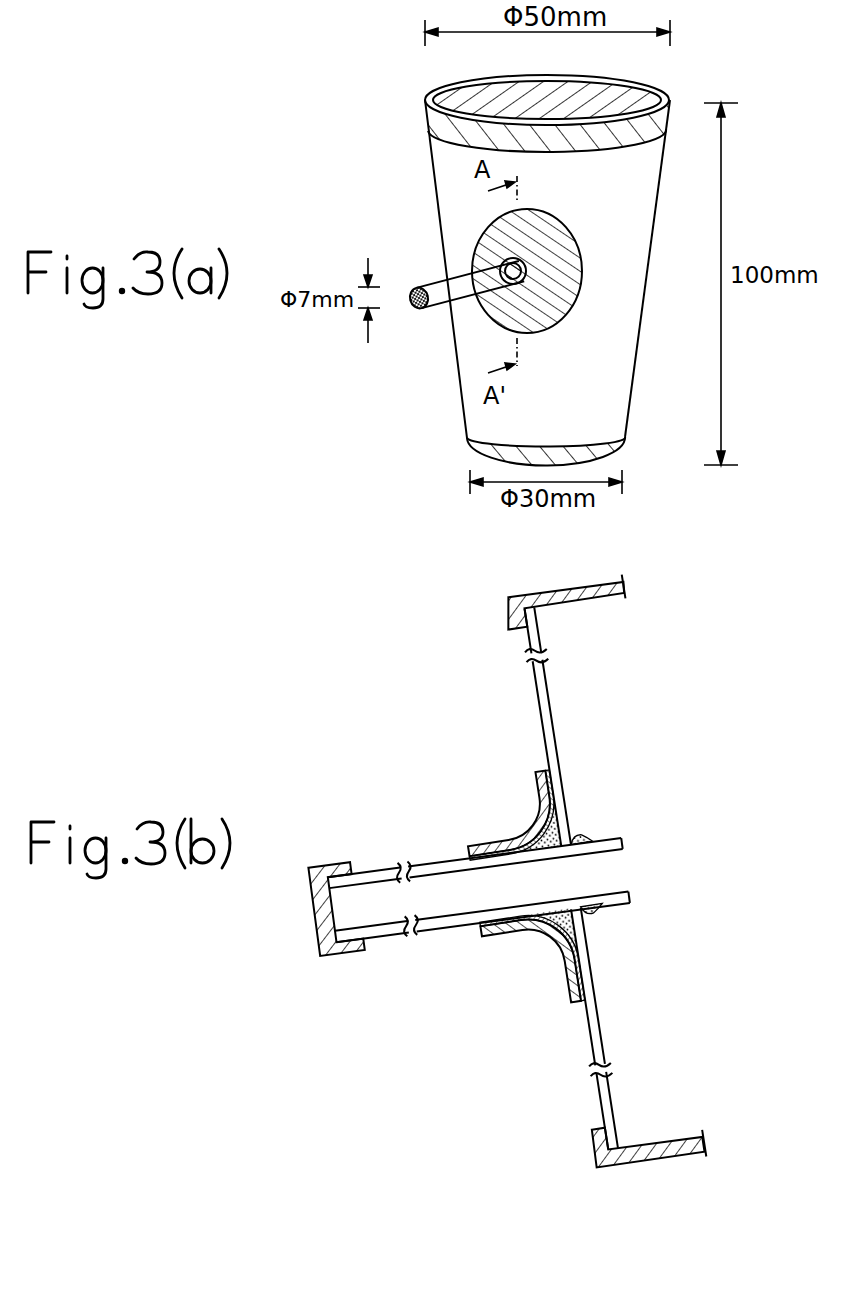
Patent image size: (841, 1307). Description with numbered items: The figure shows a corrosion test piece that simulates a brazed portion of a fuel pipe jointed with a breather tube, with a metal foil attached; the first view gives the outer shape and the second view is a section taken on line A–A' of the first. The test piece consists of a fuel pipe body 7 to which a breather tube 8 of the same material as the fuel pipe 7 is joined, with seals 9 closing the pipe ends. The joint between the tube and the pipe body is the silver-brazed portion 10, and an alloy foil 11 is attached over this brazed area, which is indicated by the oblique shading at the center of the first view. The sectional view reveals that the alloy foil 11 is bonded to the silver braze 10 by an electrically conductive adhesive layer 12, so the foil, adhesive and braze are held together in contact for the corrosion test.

The fuel pipe body 7 is at (440, 185).
In FIG. 3b, the fuel pipe body 7 is at (540, 703).
The breather tube 8 is at (461, 298).
In FIG. 3b, the breather tube 8 is at (475, 925).
The seals 9 is at (430, 120).
In FIG. 3b, the seals 9 is at (508, 608).
The silver-brazed portion 10 is at (527, 268).
In FIG. 3b, the silver-brazed portion 10 is at (575, 830).
The alloy foil 11 is at (552, 312).
In FIG. 3b, the alloy foil 11 is at (497, 838).
In FIG. 3b, the electrically conductive adhesive layer 12 is at (548, 786).